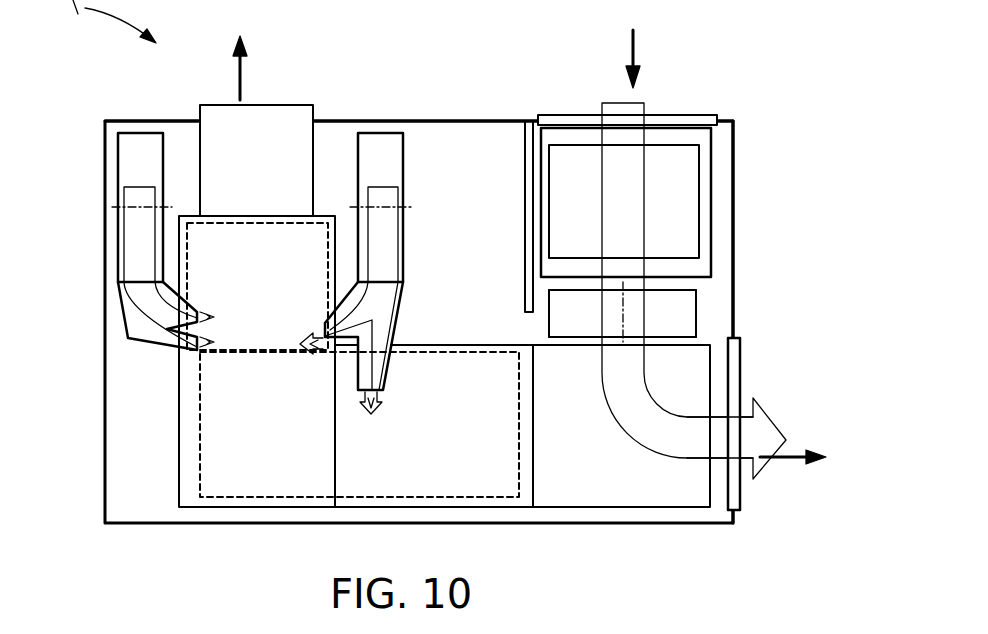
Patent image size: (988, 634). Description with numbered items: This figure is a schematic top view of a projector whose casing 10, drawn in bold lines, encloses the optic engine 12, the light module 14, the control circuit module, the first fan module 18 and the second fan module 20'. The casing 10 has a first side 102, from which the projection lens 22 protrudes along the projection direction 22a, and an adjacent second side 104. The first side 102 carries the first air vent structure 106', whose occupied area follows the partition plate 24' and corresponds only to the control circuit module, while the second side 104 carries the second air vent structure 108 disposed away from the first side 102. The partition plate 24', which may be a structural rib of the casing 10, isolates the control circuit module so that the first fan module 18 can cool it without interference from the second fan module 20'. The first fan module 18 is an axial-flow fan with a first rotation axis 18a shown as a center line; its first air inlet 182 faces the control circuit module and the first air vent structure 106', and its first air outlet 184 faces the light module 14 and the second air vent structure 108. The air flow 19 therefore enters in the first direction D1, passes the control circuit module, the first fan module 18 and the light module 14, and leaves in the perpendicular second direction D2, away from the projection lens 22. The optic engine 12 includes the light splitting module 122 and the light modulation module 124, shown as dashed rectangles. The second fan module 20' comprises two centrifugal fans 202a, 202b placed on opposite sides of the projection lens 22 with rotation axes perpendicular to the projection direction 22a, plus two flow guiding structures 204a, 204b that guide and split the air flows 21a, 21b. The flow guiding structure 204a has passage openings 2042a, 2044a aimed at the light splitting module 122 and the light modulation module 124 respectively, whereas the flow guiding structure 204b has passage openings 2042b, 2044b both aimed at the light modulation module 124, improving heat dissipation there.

The casing 10 is at (105, 148).
The first side 102 is at (449, 121).
The second side 104 is at (745, 210).
The first air vent structure 106' is at (627, 95).
The second air vent structure 108 is at (740, 492).
The optic engine 12 is at (267, 361).
The light splitting module 122 is at (200, 447).
The light modulation module 124 is at (247, 353).
The light module 14 is at (604, 488).
The first fan module 18 is at (666, 319).
The first rotation axis 18a is at (634, 317).
The first air inlet 182 is at (682, 279).
The first air outlet 184 is at (690, 341).
The air flow 19 is at (621, 94).
The second fan module 20' is at (263, 260).
The centrifugal fan 202a is at (403, 160).
The centrifugal fan 202b is at (118, 169).
The flow guiding structure 204a is at (374, 370).
The flow guiding structure 204b is at (171, 308).
The passage opening 2042a is at (372, 414).
The passage opening 2042b is at (208, 342).
The passage opening 2044a is at (300, 350).
The passage opening 2044b is at (203, 317).
The air flow 21a is at (413, 244).
The air flow 21b is at (112, 242).
The projection lens 22 is at (276, 115).
The projection direction 22a is at (246, 55).
The partition plate 24' is at (501, 216).
The first direction D1 is at (633, 45).
The second direction D2 is at (756, 438).